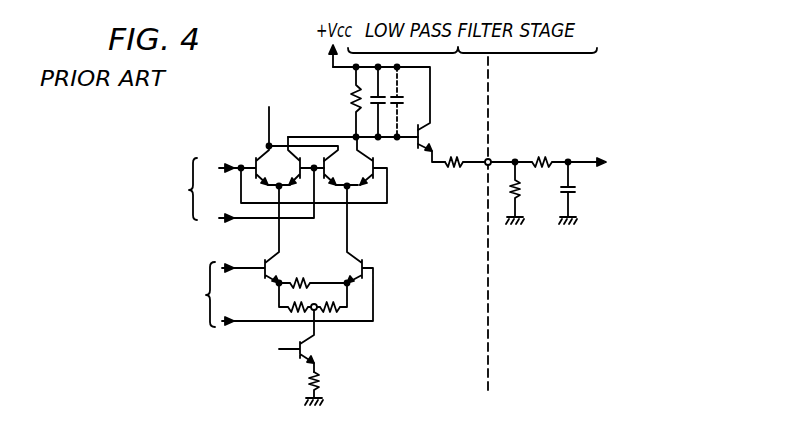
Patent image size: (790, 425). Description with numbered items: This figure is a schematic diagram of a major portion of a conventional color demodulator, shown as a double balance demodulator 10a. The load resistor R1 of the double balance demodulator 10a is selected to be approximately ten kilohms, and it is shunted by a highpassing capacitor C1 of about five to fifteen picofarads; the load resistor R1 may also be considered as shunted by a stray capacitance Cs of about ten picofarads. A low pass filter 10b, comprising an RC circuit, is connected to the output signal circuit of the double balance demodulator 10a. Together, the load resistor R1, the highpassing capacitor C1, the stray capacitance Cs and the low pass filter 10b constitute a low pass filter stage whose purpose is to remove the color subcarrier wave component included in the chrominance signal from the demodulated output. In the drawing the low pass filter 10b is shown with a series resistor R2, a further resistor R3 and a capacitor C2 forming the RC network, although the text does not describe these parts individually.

The double balance demodulator 10a is at (328, 256).
The low pass filter 10b is at (572, 194).
The load resistor R1 is at (345, 102).
The highpassing capacitor C1 is at (373, 102).
The stray capacitance Cs is at (409, 102).
The resistor R2 is at (465, 149).
The resistor R3 is at (545, 148).
The capacitor C2 is at (542, 229).